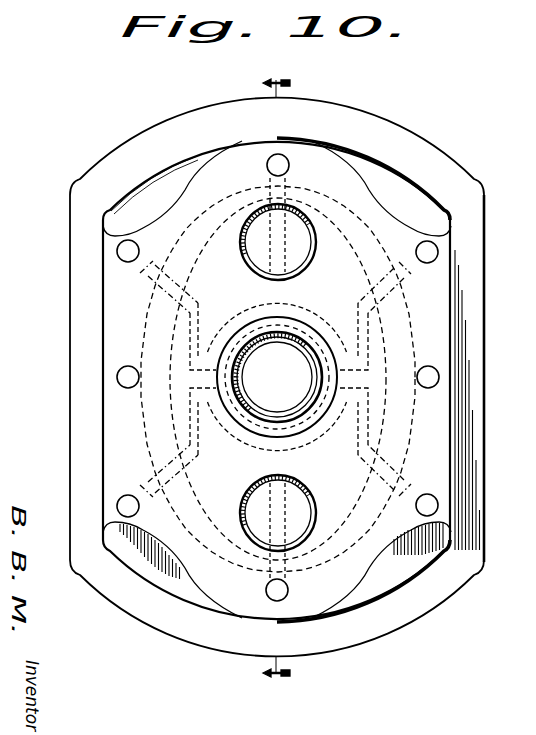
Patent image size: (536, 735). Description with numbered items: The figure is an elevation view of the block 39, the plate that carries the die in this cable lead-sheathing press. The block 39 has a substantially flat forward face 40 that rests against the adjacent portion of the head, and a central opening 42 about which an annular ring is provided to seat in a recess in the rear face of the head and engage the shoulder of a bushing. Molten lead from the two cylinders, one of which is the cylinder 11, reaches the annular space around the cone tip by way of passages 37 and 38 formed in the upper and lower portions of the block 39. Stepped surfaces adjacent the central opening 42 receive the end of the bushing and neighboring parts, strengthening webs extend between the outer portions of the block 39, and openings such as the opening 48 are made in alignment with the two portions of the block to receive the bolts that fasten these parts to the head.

The cylinder 11 is at (276, 378).
The passage 37 is at (298, 240).
The passage 38 is at (268, 541).
The block 39 is at (263, 146).
The flat forward face 40 is at (82, 240).
The central opening 42 is at (112, 372).
The opening 48 is at (283, 163).